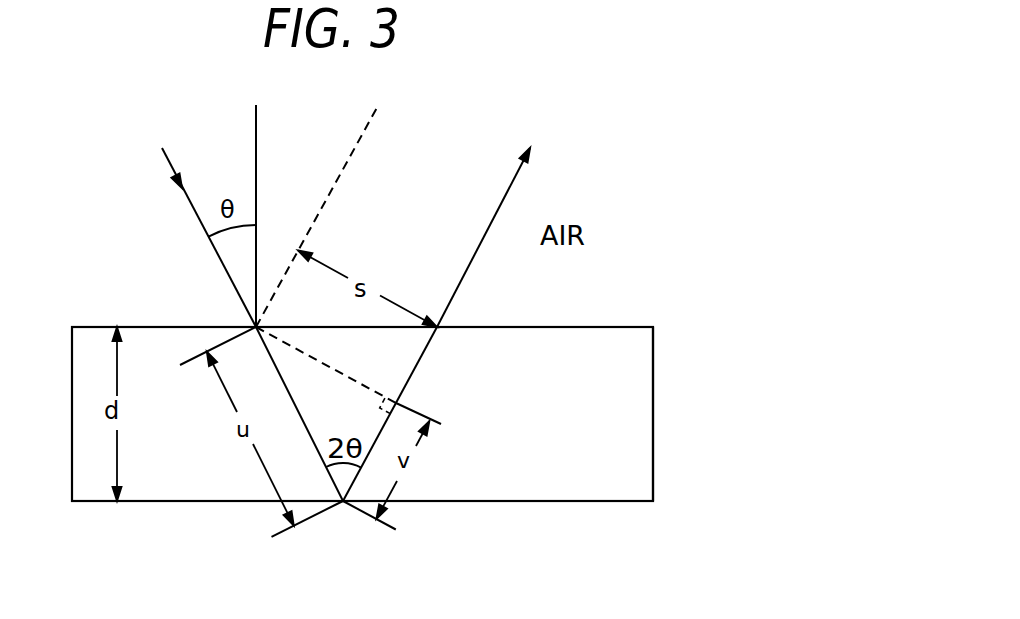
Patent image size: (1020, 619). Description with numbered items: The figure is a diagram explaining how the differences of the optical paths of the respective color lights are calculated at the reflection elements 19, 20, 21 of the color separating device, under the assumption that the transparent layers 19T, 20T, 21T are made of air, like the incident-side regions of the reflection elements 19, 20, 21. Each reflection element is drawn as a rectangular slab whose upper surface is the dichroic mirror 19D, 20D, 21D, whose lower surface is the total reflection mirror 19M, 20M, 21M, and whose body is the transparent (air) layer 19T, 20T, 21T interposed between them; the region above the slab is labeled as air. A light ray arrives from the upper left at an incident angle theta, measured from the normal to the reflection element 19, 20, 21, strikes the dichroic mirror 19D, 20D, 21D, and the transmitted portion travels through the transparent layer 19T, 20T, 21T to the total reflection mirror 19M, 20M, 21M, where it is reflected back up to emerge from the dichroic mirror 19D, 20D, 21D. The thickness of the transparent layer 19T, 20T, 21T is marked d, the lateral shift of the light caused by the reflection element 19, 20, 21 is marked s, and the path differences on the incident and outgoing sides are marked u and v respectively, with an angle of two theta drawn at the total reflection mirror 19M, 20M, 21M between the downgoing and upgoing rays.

The reflection element 19 is at (362, 460).
The reflection element 20 is at (362, 460).
The reflection element 21 is at (527, 591).
The dichroic mirror 19D is at (400, 303).
The dichroic mirror 20D is at (400, 303).
The dichroic mirror 21D is at (546, 327).
The transparent layer 19T is at (733, 414).
The transparent layer 20T is at (733, 414).
The transparent layer 21T is at (637, 446).
The total reflection mirror 19M is at (416, 526).
The total reflection mirror 20M is at (416, 526).
The total reflection mirror 21M is at (548, 501).